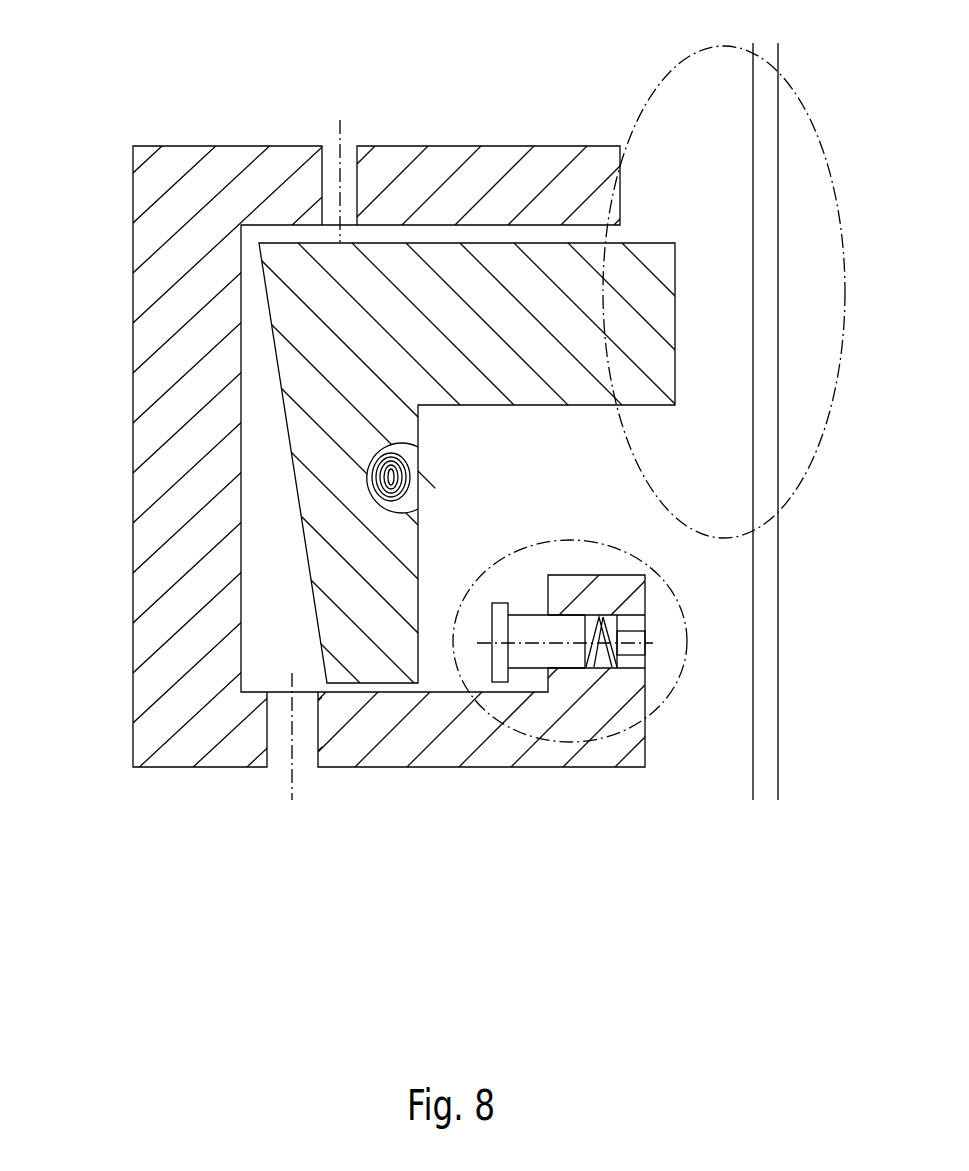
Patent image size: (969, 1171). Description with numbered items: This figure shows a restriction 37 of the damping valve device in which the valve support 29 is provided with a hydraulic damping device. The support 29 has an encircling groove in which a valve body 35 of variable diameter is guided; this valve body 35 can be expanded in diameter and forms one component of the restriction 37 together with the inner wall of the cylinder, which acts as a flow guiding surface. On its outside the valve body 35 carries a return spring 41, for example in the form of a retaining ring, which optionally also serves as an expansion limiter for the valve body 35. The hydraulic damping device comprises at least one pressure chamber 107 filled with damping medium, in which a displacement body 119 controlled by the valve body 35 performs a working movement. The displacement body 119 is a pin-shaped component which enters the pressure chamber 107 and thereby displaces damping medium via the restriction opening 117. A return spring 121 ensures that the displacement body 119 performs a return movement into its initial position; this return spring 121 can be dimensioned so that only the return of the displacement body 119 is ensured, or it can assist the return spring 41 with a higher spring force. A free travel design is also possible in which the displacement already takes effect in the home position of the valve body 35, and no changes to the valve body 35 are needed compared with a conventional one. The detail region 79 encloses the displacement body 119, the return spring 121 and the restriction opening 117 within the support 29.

The valve support 29 is at (177, 617).
The valve body 35 is at (325, 447).
The restriction 37 is at (666, 78).
The return spring 41 is at (412, 478).
The detail region circle 79 is at (557, 742).
The pressure chamber 107 is at (597, 657).
The restriction opening 117 is at (637, 650).
The displacement body 119 is at (533, 657).
The return spring 121 is at (607, 633).